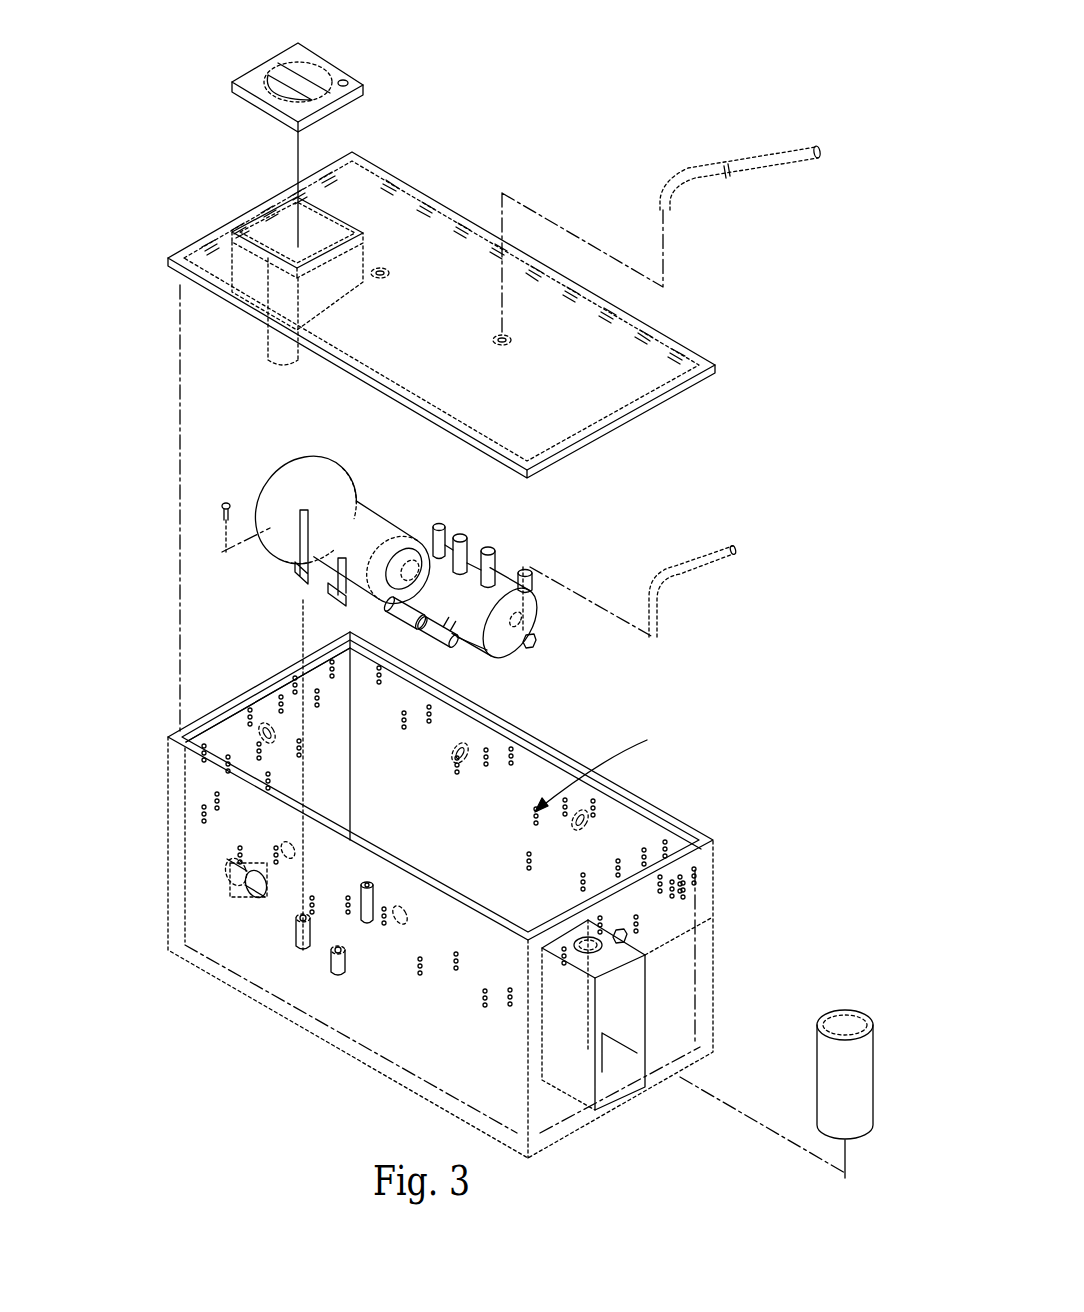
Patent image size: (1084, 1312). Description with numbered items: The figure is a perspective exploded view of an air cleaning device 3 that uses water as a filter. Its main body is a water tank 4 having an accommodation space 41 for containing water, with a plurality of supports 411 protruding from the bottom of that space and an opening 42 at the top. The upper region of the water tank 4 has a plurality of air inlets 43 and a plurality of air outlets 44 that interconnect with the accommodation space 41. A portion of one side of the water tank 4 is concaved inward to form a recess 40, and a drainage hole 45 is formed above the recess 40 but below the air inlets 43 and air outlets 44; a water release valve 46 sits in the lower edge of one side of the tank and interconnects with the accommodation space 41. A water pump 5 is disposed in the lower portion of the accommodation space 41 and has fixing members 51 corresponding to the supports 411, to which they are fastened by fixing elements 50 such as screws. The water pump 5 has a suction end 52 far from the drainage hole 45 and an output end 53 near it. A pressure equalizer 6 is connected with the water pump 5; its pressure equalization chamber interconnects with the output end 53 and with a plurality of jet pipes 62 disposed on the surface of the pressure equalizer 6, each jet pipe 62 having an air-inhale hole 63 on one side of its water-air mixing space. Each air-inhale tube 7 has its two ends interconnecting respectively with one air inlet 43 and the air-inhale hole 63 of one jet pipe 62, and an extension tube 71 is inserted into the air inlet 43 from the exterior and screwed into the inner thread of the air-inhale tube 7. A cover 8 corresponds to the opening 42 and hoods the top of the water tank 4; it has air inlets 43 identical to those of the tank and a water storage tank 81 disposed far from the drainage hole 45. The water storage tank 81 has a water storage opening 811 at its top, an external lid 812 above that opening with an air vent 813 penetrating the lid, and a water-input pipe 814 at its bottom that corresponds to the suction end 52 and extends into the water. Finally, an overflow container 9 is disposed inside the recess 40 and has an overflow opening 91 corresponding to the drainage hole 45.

The air cleaning device 3 is at (506, 593).
The water tank 4 is at (715, 947).
The recess 40 is at (645, 1025).
The accommodation space 41 is at (610, 764).
The opening 42 is at (633, 798).
The air inlets 43 is at (385, 268).
The air outlets 44 is at (660, 877).
The drainage hole 45 is at (595, 958).
The water release valve 46 is at (228, 895).
The supports 411 is at (338, 962).
The water pump 5 is at (360, 510).
The fixing elements 50 is at (230, 506).
The fixing members 51 is at (298, 565).
The suction end 52 is at (270, 490).
The output end 53 is at (392, 550).
The pressure equalizer 6 is at (520, 655).
The jet pipes 62 is at (487, 555).
The air-inhale hole 63 is at (532, 578).
The air-inhale tubes 7 is at (678, 565).
The extension tube 71 is at (742, 165).
The cover 8 is at (610, 378).
The water storage tank 81 is at (268, 240).
The water storage opening 811 is at (327, 208).
The external lid 812 is at (312, 77).
The air vent 813 is at (349, 83).
The water-input pipe 814 is at (272, 358).
The overflow container 9 is at (860, 1045).
The overflow opening 91 is at (836, 1012).